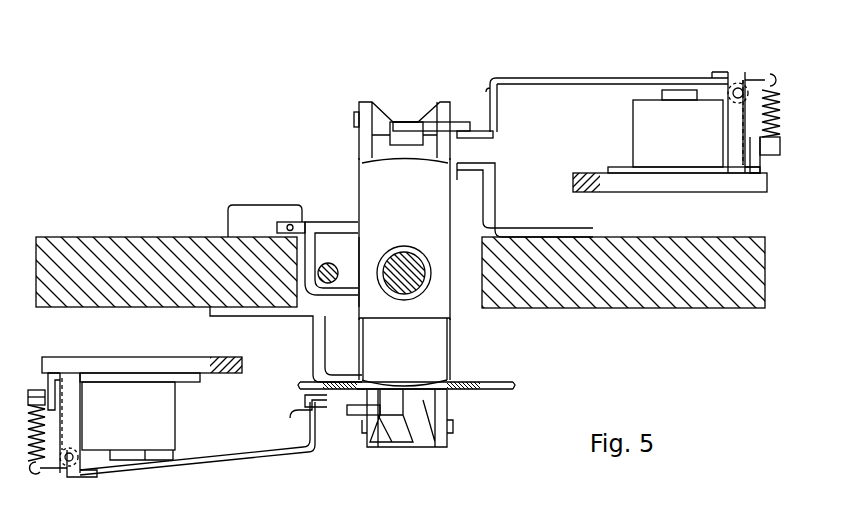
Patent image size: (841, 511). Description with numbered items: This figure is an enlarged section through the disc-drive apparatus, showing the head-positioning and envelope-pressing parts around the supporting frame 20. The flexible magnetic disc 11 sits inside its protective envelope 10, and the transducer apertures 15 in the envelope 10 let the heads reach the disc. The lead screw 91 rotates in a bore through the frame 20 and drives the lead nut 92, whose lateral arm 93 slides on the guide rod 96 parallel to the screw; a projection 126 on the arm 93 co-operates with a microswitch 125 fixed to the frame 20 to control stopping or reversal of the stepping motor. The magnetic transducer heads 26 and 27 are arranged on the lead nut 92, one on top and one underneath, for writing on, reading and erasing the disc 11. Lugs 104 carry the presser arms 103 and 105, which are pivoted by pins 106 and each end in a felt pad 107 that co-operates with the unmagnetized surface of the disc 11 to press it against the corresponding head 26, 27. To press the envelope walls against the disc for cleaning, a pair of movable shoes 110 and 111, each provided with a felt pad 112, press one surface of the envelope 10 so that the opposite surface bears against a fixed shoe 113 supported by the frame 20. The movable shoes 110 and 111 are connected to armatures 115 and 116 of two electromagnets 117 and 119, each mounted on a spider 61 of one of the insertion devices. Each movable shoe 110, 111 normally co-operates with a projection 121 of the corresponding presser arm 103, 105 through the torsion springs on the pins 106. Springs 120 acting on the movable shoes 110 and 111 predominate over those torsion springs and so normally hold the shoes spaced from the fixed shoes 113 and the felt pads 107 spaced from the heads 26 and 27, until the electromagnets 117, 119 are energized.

The envelope 10 is at (510, 385).
The magnetic disc 11 is at (447, 392).
The transducer apertures 15 is at (452, 380).
The supporting frame 20 is at (647, 303).
The magnetic transducer head 26 is at (375, 187).
The magnetic transducer head 27 is at (450, 335).
The spider 61 is at (145, 367).
The lead screw 91 is at (402, 288).
The lead nut 92 is at (370, 230).
The lateral arm 93 is at (312, 225).
The guide rod 96 is at (328, 263).
The presser arm 103 is at (405, 130).
The lugs 104 is at (365, 140).
The presser arm 105 is at (402, 417).
The pins 106 is at (356, 118).
The felt pad 107 is at (405, 145).
The movable shoe 110 is at (498, 120).
The movable shoe 111 is at (300, 410).
The felt pad 112 is at (488, 138).
The fixed shoes 113 is at (495, 197).
The armature 115 is at (675, 78).
The armature 116 is at (150, 458).
The electromagnet 117 is at (640, 118).
The electromagnet 119 is at (165, 416).
The springs 120 is at (55, 466).
The projection 121 is at (460, 120).
The microswitch 125 is at (238, 220).
The projection 126 is at (278, 223).